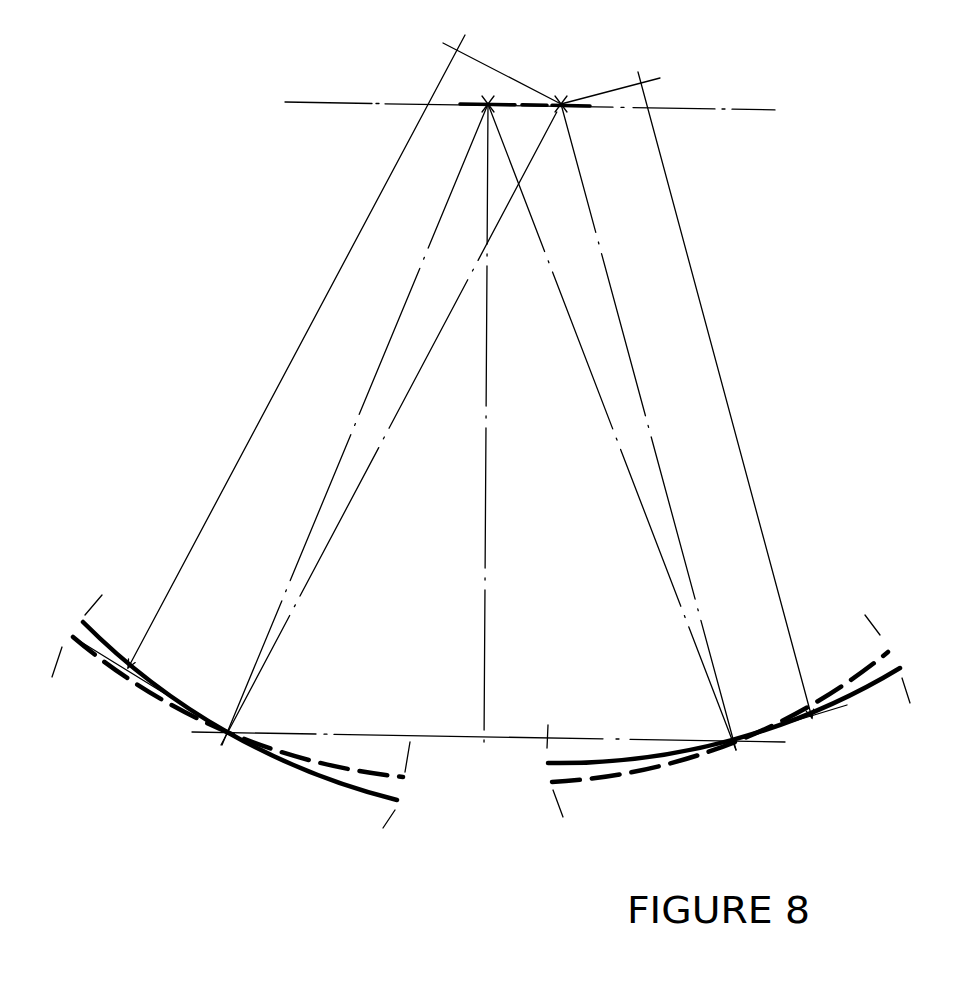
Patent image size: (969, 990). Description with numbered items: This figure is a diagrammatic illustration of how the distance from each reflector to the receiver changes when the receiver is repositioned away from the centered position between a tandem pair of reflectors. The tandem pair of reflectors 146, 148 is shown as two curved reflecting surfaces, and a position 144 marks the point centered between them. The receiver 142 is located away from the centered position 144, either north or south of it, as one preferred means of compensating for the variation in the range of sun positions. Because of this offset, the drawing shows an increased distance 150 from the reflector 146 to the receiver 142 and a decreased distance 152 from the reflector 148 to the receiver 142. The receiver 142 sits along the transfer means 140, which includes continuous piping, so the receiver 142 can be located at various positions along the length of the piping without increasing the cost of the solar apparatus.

The transfer means 140 is at (312, 100).
The receiver 142 is at (574, 108).
The centered position 144 is at (468, 108).
The reflector 146 is at (327, 778).
The reflector 148 is at (832, 703).
The increased distance 150 is at (294, 358).
The decreased distance 152 is at (717, 363).